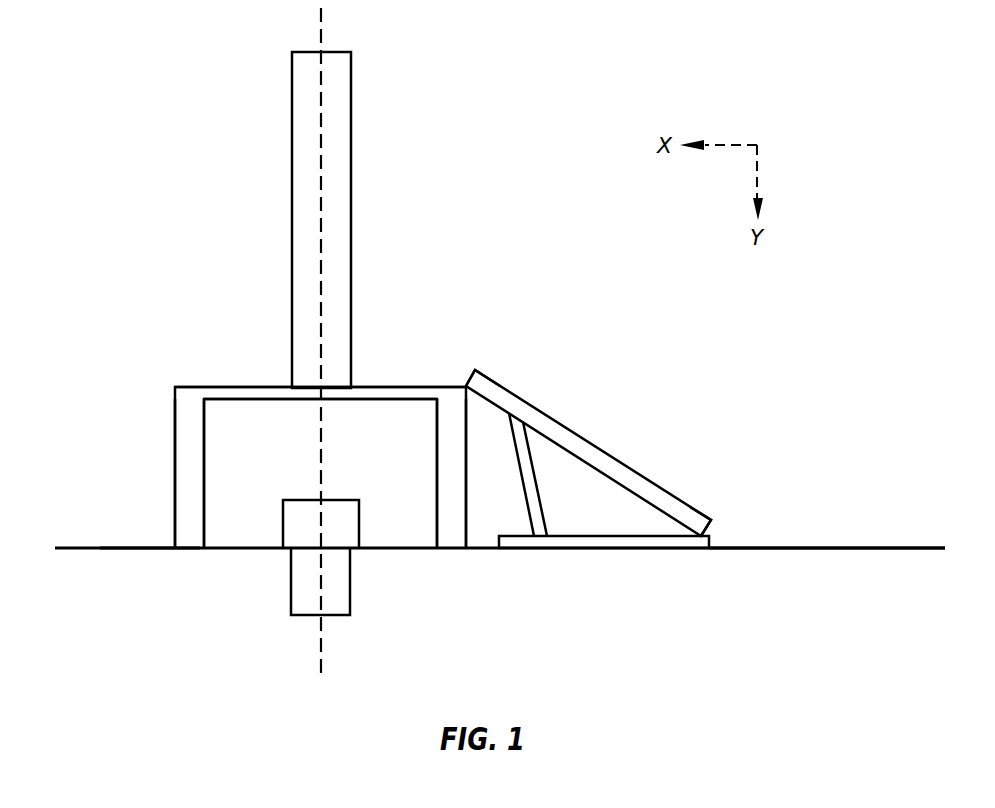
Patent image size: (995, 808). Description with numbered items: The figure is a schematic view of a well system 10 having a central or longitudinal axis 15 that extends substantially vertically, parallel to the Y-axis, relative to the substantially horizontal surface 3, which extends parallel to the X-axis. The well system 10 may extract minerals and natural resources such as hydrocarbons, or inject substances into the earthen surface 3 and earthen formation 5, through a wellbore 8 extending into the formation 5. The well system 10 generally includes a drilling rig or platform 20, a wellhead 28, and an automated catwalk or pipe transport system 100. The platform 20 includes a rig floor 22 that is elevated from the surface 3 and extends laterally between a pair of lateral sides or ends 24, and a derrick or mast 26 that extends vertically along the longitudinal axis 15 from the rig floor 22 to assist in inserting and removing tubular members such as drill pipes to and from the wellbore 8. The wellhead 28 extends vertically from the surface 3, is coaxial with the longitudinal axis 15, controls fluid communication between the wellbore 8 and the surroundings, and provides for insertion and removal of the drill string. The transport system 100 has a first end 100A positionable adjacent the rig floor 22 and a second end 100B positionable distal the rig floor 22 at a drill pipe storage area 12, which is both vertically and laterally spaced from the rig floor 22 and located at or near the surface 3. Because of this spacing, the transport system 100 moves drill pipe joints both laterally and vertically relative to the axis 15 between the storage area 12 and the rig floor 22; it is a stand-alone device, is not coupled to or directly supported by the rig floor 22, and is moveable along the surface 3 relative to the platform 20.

The surface 3 is at (85, 547).
The earthen formation 5 is at (148, 573).
The wellbore 8 is at (305, 587).
The well system 10 is at (282, 336).
The drill pipe storage area 12 is at (763, 547).
The central or longitudinal axis 15 is at (323, 26).
The drilling rig or platform 20 is at (193, 396).
The rig floor 22 is at (247, 386).
The lateral sides or ends 24 is at (175, 395).
The derrick or mast 26 is at (338, 150).
The wellhead 28 is at (293, 523).
The automated catwalk or pipe transport system 100 is at (600, 458).
The first end 100A is at (444, 366).
The second end 100B is at (718, 510).